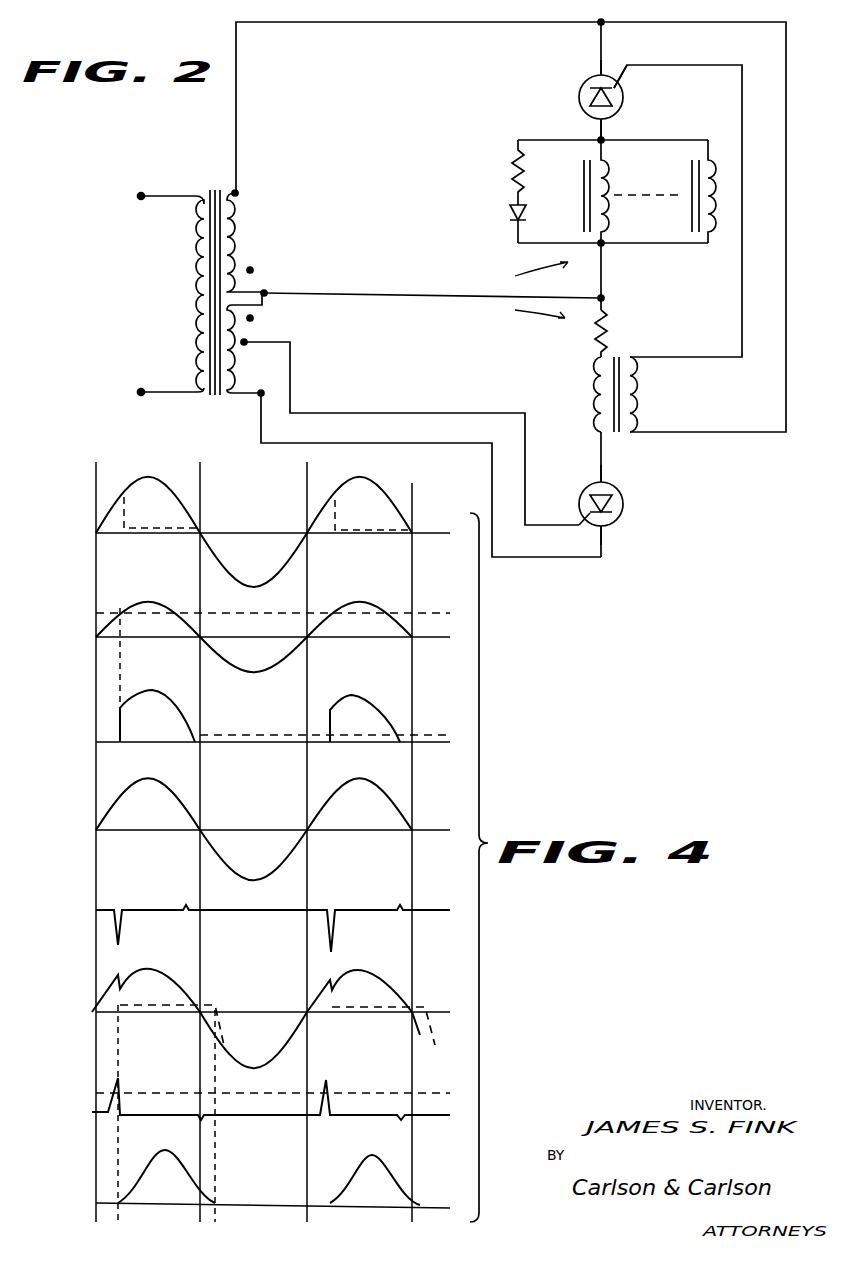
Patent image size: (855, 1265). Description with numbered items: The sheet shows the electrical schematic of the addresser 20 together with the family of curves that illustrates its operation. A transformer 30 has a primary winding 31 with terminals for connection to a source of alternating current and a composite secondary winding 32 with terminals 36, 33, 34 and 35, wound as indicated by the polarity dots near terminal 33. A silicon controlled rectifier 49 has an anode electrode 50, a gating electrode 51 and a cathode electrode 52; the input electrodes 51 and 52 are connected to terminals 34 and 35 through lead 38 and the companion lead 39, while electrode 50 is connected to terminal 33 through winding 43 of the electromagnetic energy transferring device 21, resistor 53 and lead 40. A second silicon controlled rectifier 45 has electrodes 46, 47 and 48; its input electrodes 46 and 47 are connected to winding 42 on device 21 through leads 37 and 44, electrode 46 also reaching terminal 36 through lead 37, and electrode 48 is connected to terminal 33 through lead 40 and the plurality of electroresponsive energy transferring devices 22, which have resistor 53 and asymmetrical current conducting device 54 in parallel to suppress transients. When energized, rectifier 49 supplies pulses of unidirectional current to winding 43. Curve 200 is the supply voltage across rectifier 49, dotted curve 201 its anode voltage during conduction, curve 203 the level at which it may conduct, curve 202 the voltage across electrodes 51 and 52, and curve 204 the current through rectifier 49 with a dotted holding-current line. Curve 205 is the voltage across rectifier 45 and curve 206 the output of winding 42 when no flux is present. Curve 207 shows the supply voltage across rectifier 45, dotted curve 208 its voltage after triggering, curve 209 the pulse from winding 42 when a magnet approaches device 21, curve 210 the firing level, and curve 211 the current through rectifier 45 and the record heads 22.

In FIG. 2, the addresser 20 is at (430, 101).
In FIG. 2, the electromagnetic energy transferring device 21 is at (660, 345).
In FIG. 2, the electroresponsive energy transferring devices 22 is at (614, 186).
In FIG. 2, the transformer 30 is at (216, 188).
In FIG. 2, the primary winding 31 is at (190, 196).
In FIG. 2, the composite secondary winding 32 is at (240, 246).
In FIG. 2, the terminal 33 is at (267, 291).
In FIG. 2, the terminal 34 is at (250, 342).
In FIG. 2, the terminal 35 is at (258, 397).
In FIG. 2, the terminal 36 is at (240, 193).
In FIG. 2, the lead 37 is at (372, 22).
In FIG. 2, the lead 38 is at (453, 413).
In FIG. 2, the conductor 39 is at (466, 445).
In FIG. 2, the lead 40 is at (450, 276).
In FIG. 2, the winding 42 is at (642, 413).
In FIG. 2, the winding 43 is at (594, 400).
In FIG. 2, the lead 44 is at (710, 357).
In FIG. 2, the silicon controlled rectifier 45 is at (580, 104).
In FIG. 2, the electrode 46 is at (598, 65).
In FIG. 2, the electrode 47 is at (624, 78).
In FIG. 2, the electrode 48 is at (604, 130).
In FIG. 2, the silicon controlled rectifier 49 is at (624, 496).
In FIG. 2, the anode electrode 50 is at (603, 470).
In FIG. 2, the gating electrode 51 is at (577, 525).
In FIG. 2, the cathode electrode 52 is at (604, 550).
In FIG. 2, the resistor 53 is at (512, 172).
In FIG. 2, the asymmetrical current conducting device 54 is at (508, 212).
In FIG. 4, the curve 200 is at (110, 500).
In FIG. 4, the dotted curve 201 is at (125, 508).
In FIG. 4, the curve 202 is at (143, 606).
In FIG. 4, the curve 203 is at (107, 613).
In FIG. 4, the curve 204 is at (154, 690).
In FIG. 4, the curve 205 is at (116, 793).
In FIG. 4, the curve 206 is at (185, 907).
In FIG. 4, the curve 207 is at (185, 989).
In FIG. 4, the dotted curve 208 is at (210, 1007).
In FIG. 4, the curve 209 is at (117, 1078).
In FIG. 4, the curve 210 is at (180, 1062).
In FIG. 4, the curve 211 is at (178, 1158).